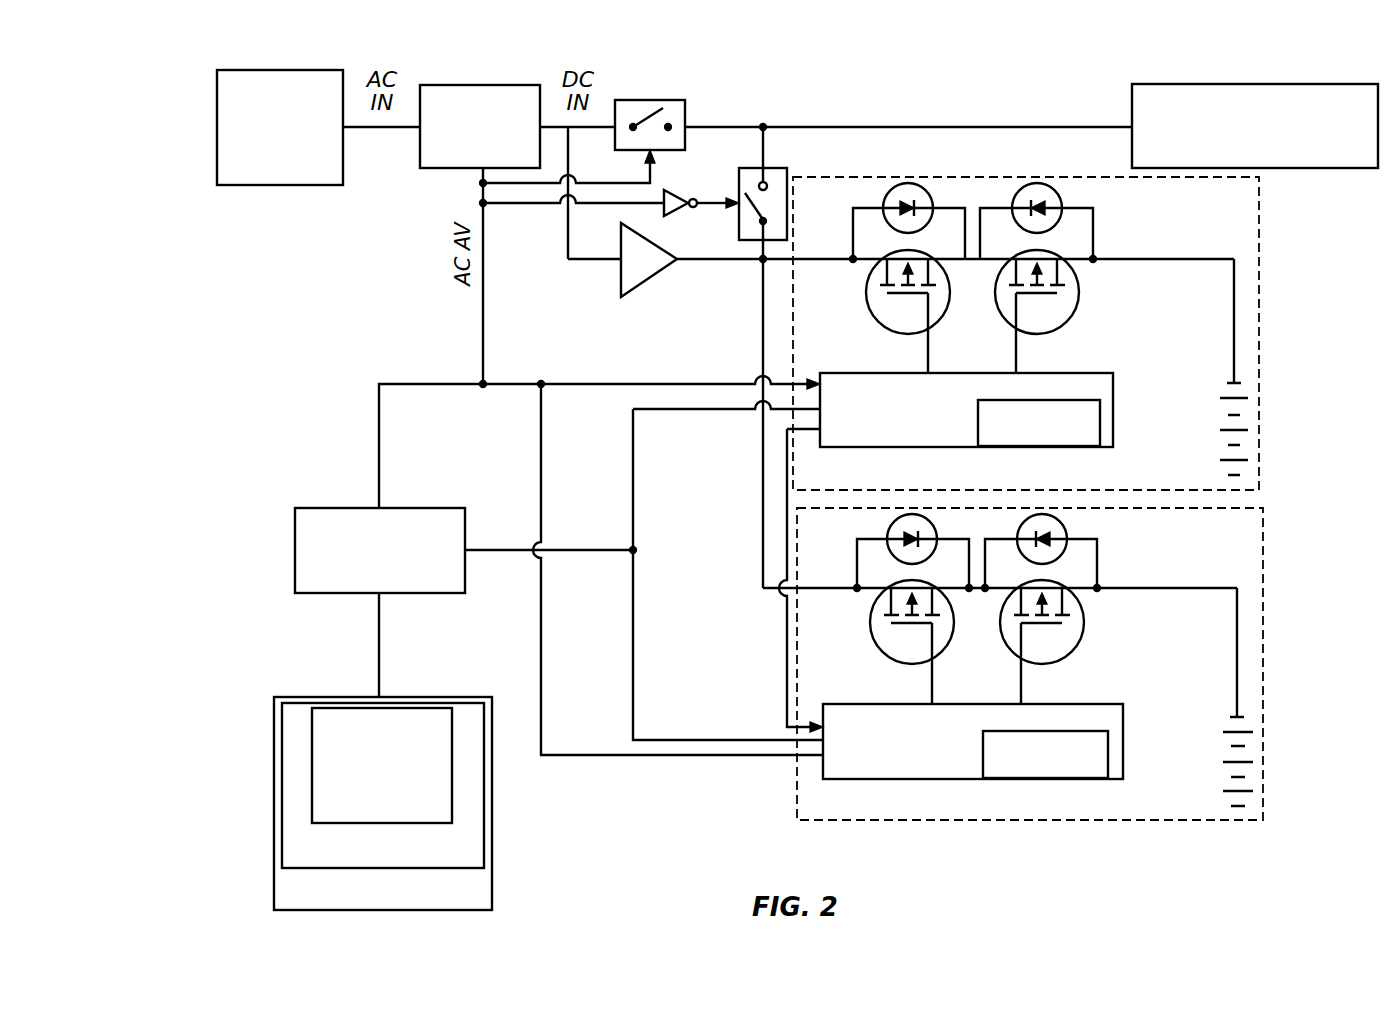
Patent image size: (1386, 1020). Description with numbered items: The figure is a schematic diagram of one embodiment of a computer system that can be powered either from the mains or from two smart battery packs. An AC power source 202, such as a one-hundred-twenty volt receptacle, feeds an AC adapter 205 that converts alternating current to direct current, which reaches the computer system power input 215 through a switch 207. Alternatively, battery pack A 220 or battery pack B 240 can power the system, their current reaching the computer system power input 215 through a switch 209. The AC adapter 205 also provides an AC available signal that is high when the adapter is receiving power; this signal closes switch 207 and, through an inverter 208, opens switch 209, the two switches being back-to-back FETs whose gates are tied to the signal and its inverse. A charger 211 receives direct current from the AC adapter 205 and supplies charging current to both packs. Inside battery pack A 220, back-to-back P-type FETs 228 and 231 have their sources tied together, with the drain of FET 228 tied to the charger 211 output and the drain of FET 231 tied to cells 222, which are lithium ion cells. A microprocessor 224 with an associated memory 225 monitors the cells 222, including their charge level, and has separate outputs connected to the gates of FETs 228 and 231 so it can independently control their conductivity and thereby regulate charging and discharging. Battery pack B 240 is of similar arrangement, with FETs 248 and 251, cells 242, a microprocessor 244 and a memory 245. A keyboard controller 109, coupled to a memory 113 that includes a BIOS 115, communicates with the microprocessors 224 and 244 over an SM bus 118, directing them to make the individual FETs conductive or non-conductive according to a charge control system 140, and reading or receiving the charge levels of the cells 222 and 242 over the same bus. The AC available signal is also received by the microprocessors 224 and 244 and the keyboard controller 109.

The keyboard controller 109 is at (345, 515).
The memory 113 is at (290, 900).
The BIOS 115 is at (290, 852).
The SM bus 118 is at (633, 655).
The charge control system 140 is at (330, 715).
The AC power source 202 is at (260, 199).
The AC adapter 205 is at (485, 85).
The switch 207 is at (655, 100).
The inverter 208 is at (680, 190).
The switch 209 is at (787, 167).
The charger 211 is at (621, 292).
The computer system power input 215 is at (1175, 84).
The battery pack A 220 is at (1261, 326).
The cells 222 is at (1252, 418).
The microprocessor 224 is at (1073, 378).
The memory 225 is at (1103, 424).
The FET 228 is at (874, 332).
The FET 231 is at (1077, 310).
The battery pack B 240 is at (1265, 660).
The cells 242 is at (1255, 750).
The microprocessor 244 is at (1073, 704).
The memory 245 is at (1110, 758).
The FET 248 is at (877, 665).
The FET 251 is at (1080, 640).